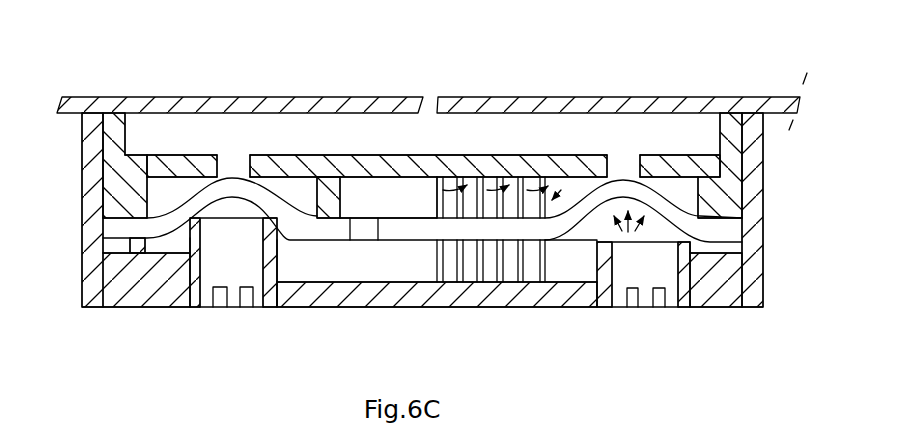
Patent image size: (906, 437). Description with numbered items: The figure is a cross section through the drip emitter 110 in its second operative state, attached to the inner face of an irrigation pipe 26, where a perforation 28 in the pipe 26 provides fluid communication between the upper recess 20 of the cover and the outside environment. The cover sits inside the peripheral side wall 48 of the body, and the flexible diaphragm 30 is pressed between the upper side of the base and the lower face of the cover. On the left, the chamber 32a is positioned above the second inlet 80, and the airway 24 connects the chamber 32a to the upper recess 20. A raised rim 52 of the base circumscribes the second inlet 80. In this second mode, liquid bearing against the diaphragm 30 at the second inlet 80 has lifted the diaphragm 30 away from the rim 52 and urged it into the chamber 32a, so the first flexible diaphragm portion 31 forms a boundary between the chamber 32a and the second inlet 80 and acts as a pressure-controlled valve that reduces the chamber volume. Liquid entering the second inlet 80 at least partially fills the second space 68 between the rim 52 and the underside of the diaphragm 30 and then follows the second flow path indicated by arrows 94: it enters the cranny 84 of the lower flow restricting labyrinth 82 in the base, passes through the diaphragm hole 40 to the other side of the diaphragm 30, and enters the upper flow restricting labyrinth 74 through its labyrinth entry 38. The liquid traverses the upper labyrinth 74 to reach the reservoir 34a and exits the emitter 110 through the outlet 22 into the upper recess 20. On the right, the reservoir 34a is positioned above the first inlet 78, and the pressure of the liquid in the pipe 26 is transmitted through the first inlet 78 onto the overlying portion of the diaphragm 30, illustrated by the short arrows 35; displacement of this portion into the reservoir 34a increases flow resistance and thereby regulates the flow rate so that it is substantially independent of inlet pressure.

The drip emitter 110 is at (79, 175).
The irrigation pipe 26 is at (136, 95).
The perforation 28 is at (428, 96).
The chamber 32a is at (156, 197).
The airway 24 is at (238, 158).
The first flexible diaphragm portion 31 is at (288, 190).
The upper recess 20 is at (322, 172).
The labyrinth entry 38 is at (397, 202).
The diaphragm hole 40 is at (360, 228).
The upper flow restricting labyrinth 74 is at (551, 181).
The outlet 22 is at (621, 175).
The reservoir 34a is at (694, 197).
The peripheral side wall 48 is at (766, 213).
The flexible diaphragm 30 is at (128, 230).
The second space 68 is at (175, 229).
The raised rim 52 is at (181, 240).
The second inlet 80 is at (232, 252).
The second flow path 94 is at (293, 233).
The cranny 84 is at (360, 235).
The lower flow restricting labyrinth 82 is at (556, 270).
The first inlet 78 is at (647, 270).
The short arrows 35 is at (662, 232).